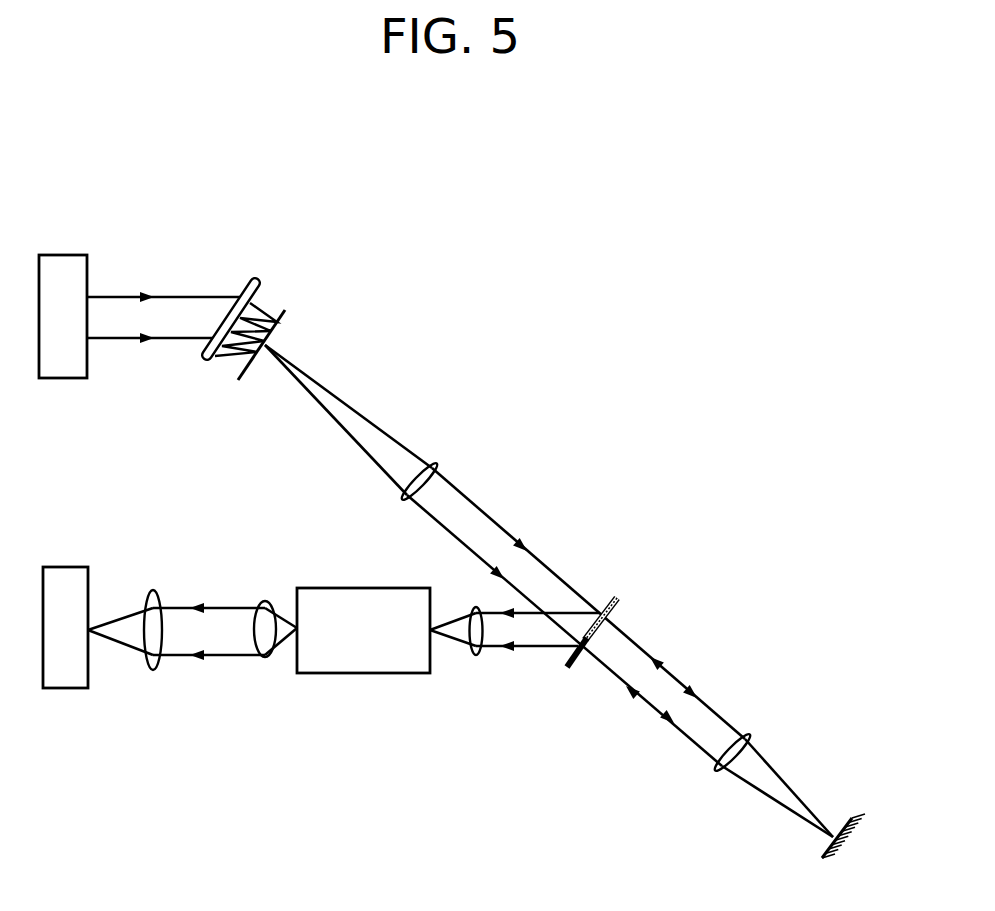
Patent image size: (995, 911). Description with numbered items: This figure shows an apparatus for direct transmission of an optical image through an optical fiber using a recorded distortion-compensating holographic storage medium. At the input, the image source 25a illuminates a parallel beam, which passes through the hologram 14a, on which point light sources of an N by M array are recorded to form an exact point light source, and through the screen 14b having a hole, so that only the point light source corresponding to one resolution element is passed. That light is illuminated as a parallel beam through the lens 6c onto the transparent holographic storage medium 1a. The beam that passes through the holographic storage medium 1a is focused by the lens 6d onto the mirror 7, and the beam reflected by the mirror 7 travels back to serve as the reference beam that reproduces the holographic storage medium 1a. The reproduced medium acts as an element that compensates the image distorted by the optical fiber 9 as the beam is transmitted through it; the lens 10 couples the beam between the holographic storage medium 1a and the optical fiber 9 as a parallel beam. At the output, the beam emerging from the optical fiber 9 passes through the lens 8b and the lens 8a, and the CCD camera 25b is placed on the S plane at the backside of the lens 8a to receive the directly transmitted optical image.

The image source 25a is at (60, 381).
The hologram 14a is at (252, 272).
The screen having a hole 14b is at (296, 307).
The lens 6c is at (438, 451).
The transparent holographic storage medium 1a is at (612, 587).
The lens 6d is at (750, 724).
The mirror 7 is at (848, 814).
The CCD camera 25b is at (60, 691).
The lens 8a is at (153, 676).
The lens 8b is at (265, 666).
The optical fiber 9 is at (363, 678).
The lens 10 is at (475, 668).